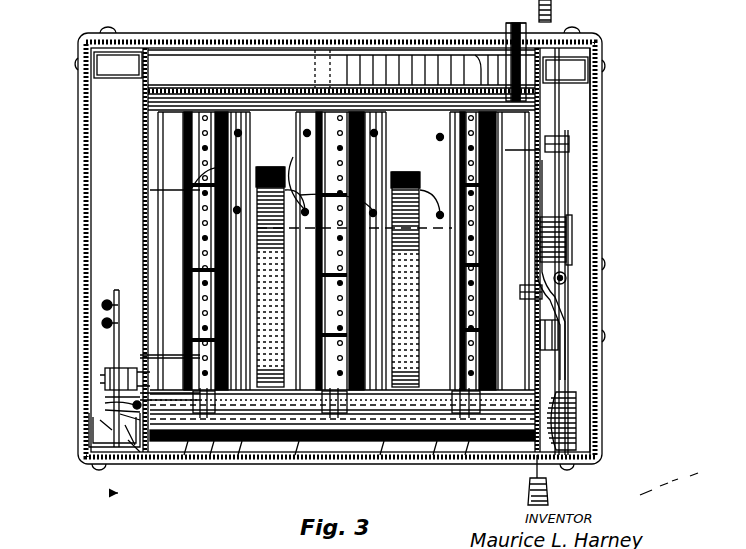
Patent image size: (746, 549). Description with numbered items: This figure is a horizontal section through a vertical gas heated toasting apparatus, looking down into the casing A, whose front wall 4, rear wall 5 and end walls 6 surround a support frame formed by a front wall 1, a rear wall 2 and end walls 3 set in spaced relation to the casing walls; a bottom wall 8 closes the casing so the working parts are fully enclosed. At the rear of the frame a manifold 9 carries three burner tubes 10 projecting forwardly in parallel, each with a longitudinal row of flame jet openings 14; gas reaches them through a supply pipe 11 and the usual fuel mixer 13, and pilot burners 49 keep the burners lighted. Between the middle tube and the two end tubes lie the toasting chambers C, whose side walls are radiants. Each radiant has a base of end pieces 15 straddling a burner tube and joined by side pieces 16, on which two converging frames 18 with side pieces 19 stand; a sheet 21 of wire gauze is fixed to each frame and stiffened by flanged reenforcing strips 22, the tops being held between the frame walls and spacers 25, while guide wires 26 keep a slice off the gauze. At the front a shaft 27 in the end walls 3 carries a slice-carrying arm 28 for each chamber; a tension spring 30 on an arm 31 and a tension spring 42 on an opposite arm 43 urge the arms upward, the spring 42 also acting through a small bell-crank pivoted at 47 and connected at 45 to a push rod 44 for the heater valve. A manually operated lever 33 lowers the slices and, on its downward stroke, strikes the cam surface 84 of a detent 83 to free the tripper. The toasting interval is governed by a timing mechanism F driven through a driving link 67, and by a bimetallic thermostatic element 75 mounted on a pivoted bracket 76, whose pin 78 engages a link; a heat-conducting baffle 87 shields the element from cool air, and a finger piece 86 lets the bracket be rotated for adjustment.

The front wall 1 is at (250, 458).
The rear wall 2 is at (262, 43).
The end walls 3 is at (150, 190).
The front wall of the casing 4 is at (510, 498).
The rear wall of the casing 5 is at (327, 43).
The end walls of the casing 6 is at (597, 125).
The bottom wall 8 is at (248, 105).
The manifold 9 is at (372, 60).
The burner tubes 10 is at (195, 152).
The supply pipe 11 is at (221, 108).
The fuel mixer 13 is at (142, 137).
The outlet or flame jet openings 14 is at (200, 222).
The end pieces 15 is at (193, 105).
The side pieces 16 is at (165, 122).
The frames 18 is at (317, 323).
The side pieces 19 is at (165, 353).
The sheet of wire gauze 21 is at (200, 196).
The reenforcing strips 22 is at (237, 207).
The spacers 25 is at (351, 5).
The guide wires 26 is at (250, 182).
The shaft 27 is at (105, 380).
The slice-carrying arm 28 is at (338, 277).
The tension spring 30 is at (102, 316).
The arm 31 is at (114, 350).
The manually operated lever 33 is at (546, 208).
The tension spring 42 is at (89, 440).
The arm 43 is at (105, 400).
The push rod 44 is at (117, 466).
The pivotal connection 45 is at (305, 255).
The pivotal connection 47 is at (105, 411).
The pilot burners 49 is at (188, 458).
The driving link 67 is at (567, 278).
The bimetallic thermostatic element 75 is at (529, 295).
The bracket 76 is at (600, 178).
The pin 78 is at (536, 337).
The detent 83 is at (551, 231).
The cam surface 84 is at (567, 243).
The finger piece 86 is at (539, 7).
The heat-conducting baffle 87 is at (535, 158).
The casing A is at (601, 207).
The toasting chambers C is at (275, 115).
The timing mechanism F is at (578, 420).